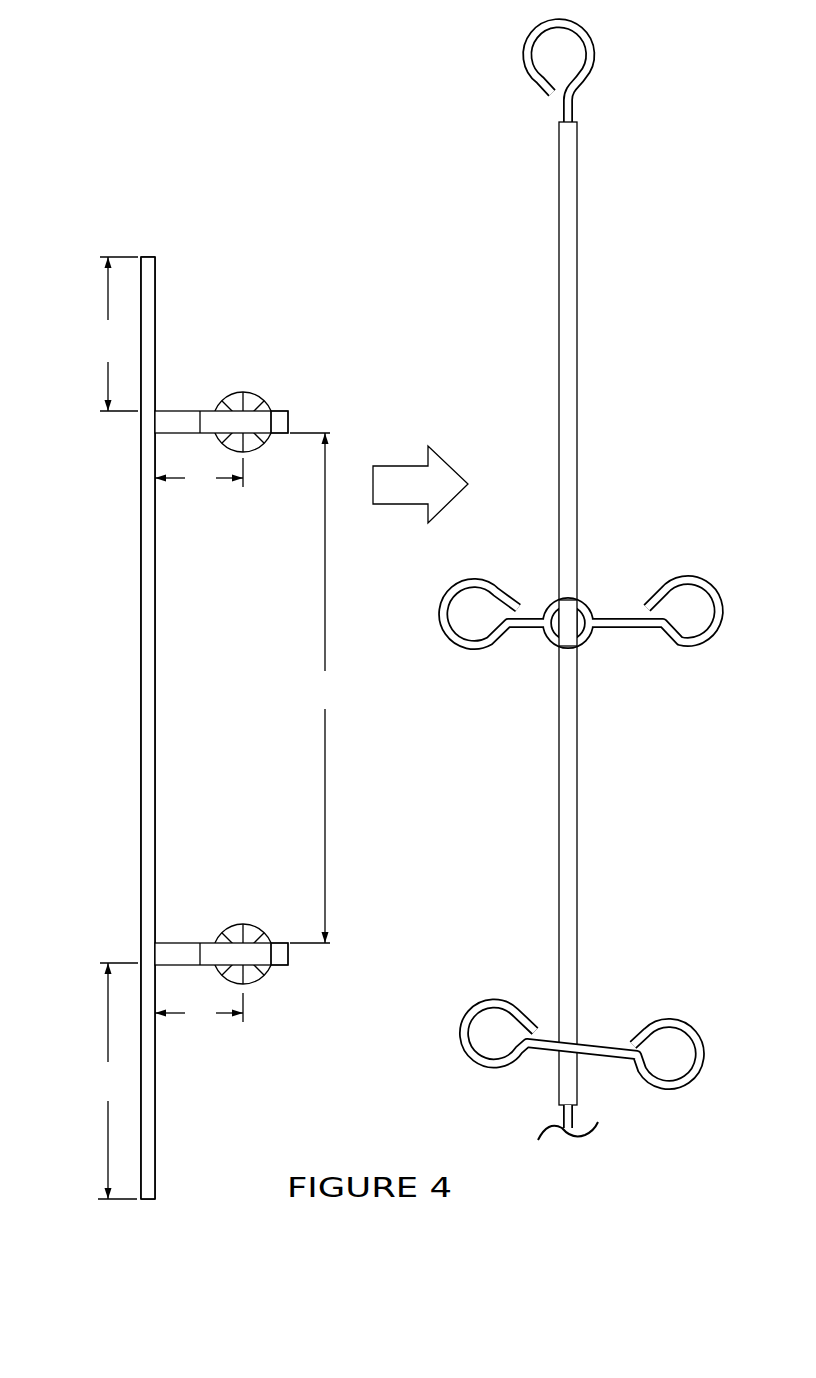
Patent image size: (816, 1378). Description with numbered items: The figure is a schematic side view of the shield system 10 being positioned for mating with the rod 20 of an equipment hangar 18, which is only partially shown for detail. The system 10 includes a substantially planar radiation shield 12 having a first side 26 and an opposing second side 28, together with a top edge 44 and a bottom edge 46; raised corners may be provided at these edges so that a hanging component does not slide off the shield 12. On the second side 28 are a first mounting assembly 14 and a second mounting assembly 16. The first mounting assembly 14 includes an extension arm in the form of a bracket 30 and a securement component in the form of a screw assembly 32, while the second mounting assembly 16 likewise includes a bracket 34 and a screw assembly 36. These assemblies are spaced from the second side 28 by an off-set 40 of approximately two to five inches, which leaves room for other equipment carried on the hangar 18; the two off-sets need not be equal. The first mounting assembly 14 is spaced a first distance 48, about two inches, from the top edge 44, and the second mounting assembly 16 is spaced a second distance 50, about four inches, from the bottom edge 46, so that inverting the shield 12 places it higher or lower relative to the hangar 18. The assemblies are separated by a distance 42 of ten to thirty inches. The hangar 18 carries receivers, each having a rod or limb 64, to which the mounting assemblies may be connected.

The shield system 10 is at (103, 242).
The radiation shield 12 is at (125, 575).
The first mounting assembly 14 is at (251, 390).
The second mounting assembly 16 is at (246, 924).
The equipment hangar 18 is at (567, 554).
The rod 20 is at (577, 823).
The first side 26 is at (142, 662).
The second side 28 is at (157, 625).
The bracket 30 is at (178, 411).
The screw assembly 32 is at (273, 411).
The bracket 34 is at (178, 943).
The screw assembly 36 is at (250, 980).
The off-set 40 is at (199, 743).
The distance 42 is at (313, 688).
The top edge 44 is at (150, 257).
The bottom edge 46 is at (150, 1199).
The first distance 48 is at (116, 334).
The second distance 50 is at (116, 1081).
The limb 64 is at (602, 1057).